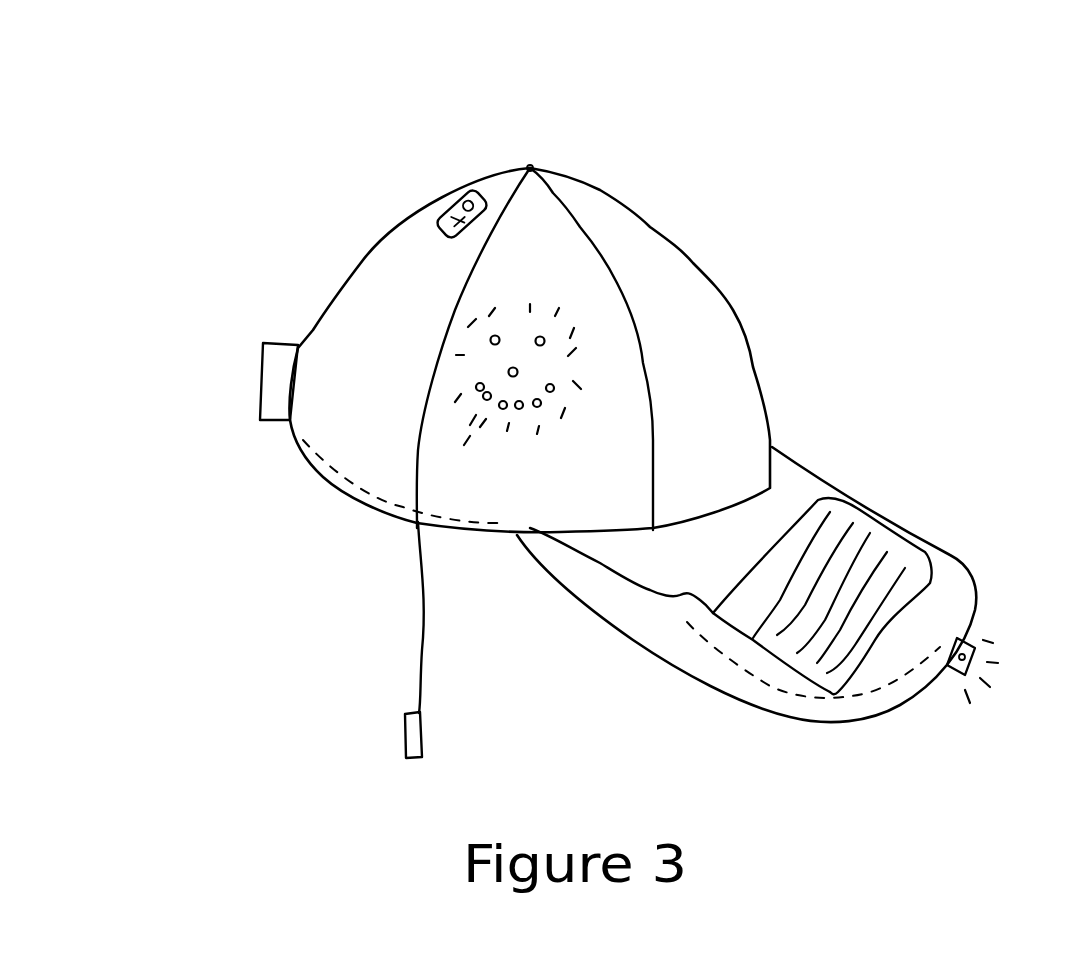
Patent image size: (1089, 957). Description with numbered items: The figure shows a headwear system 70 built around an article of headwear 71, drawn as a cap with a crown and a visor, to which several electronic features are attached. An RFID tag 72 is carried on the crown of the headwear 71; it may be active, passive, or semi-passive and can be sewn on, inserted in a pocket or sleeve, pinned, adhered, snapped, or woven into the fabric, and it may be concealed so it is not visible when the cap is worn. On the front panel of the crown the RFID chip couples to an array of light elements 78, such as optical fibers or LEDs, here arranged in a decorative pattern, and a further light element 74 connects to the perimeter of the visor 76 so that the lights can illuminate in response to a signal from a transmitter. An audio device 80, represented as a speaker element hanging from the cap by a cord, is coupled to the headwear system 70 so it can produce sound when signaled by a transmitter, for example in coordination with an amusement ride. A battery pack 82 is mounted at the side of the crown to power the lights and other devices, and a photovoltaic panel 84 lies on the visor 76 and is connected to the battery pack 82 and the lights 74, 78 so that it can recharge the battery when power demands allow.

The headwear system 70 is at (862, 117).
The headwear 71 is at (627, 197).
The RFID tag 72 is at (447, 205).
The light element 74 is at (963, 655).
The brim 76 is at (807, 477).
The array of light elements 78 is at (590, 324).
The audio device 80 is at (408, 730).
The battery pack 82 is at (277, 377).
The photovoltaic panel 84 is at (897, 543).